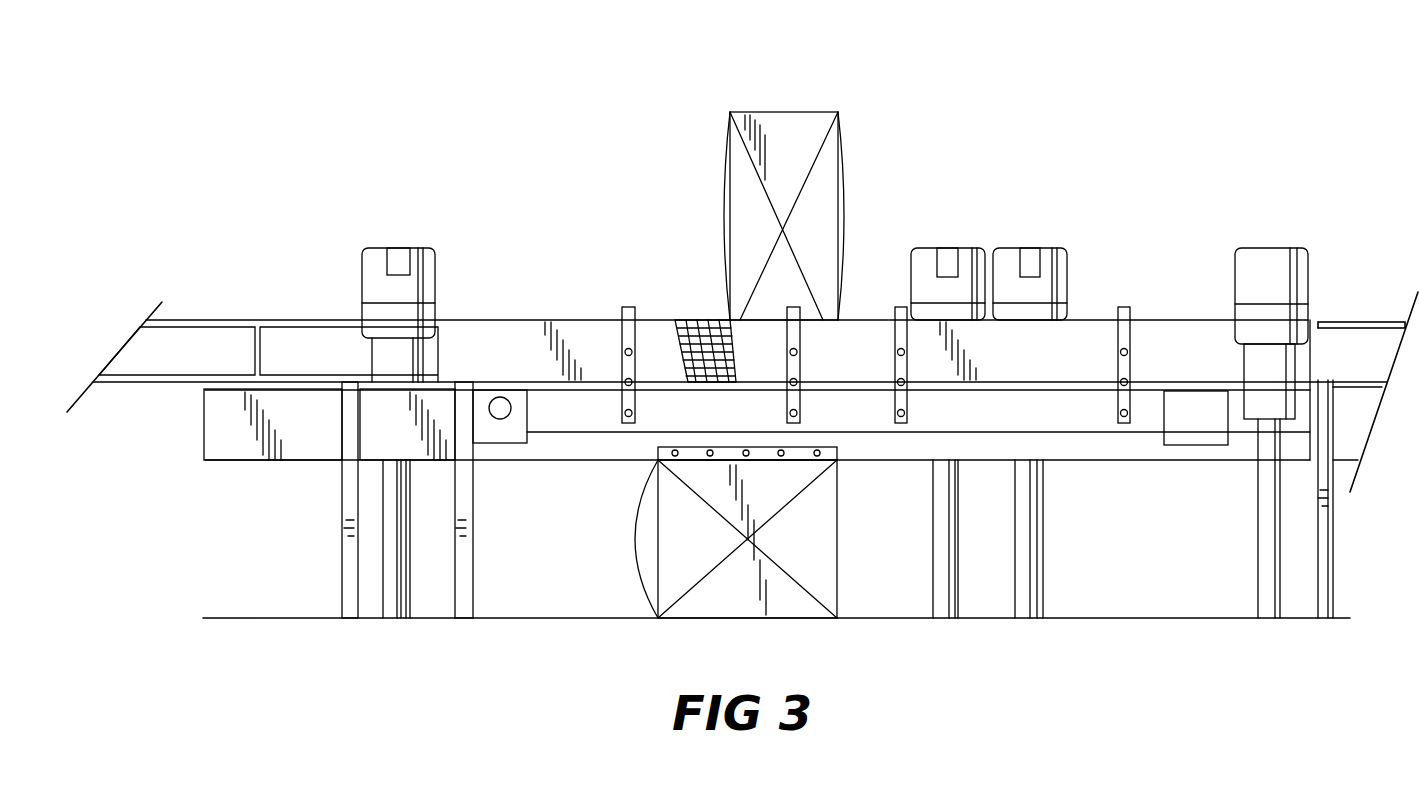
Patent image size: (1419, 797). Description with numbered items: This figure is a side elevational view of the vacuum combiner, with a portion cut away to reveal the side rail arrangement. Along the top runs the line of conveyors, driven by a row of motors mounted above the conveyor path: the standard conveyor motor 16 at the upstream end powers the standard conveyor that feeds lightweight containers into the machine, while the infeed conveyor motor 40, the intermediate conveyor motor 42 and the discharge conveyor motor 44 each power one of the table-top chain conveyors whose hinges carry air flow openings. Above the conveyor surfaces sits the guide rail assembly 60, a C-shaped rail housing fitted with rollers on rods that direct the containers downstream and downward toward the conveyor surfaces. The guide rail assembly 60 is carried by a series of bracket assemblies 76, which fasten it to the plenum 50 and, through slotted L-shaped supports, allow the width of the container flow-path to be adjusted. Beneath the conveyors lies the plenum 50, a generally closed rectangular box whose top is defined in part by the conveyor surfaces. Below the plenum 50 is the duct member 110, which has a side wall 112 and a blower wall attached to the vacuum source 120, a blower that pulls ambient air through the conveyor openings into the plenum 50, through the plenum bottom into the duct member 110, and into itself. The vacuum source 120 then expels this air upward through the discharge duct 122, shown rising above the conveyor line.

The standard conveyor motor 16 is at (398, 257).
The infeed conveyor motor 40 is at (948, 262).
The intermediate conveyor motor 42 is at (1030, 262).
The discharge conveyor motor 44 is at (1264, 258).
The plenum 50 is at (307, 443).
The guide rail assembly 60 is at (713, 305).
The bracket assemblies 76 is at (898, 307).
The duct member 110 is at (730, 600).
The side wall 112 is at (838, 488).
The vacuum source 120 is at (643, 535).
The discharge duct 122 is at (822, 118).